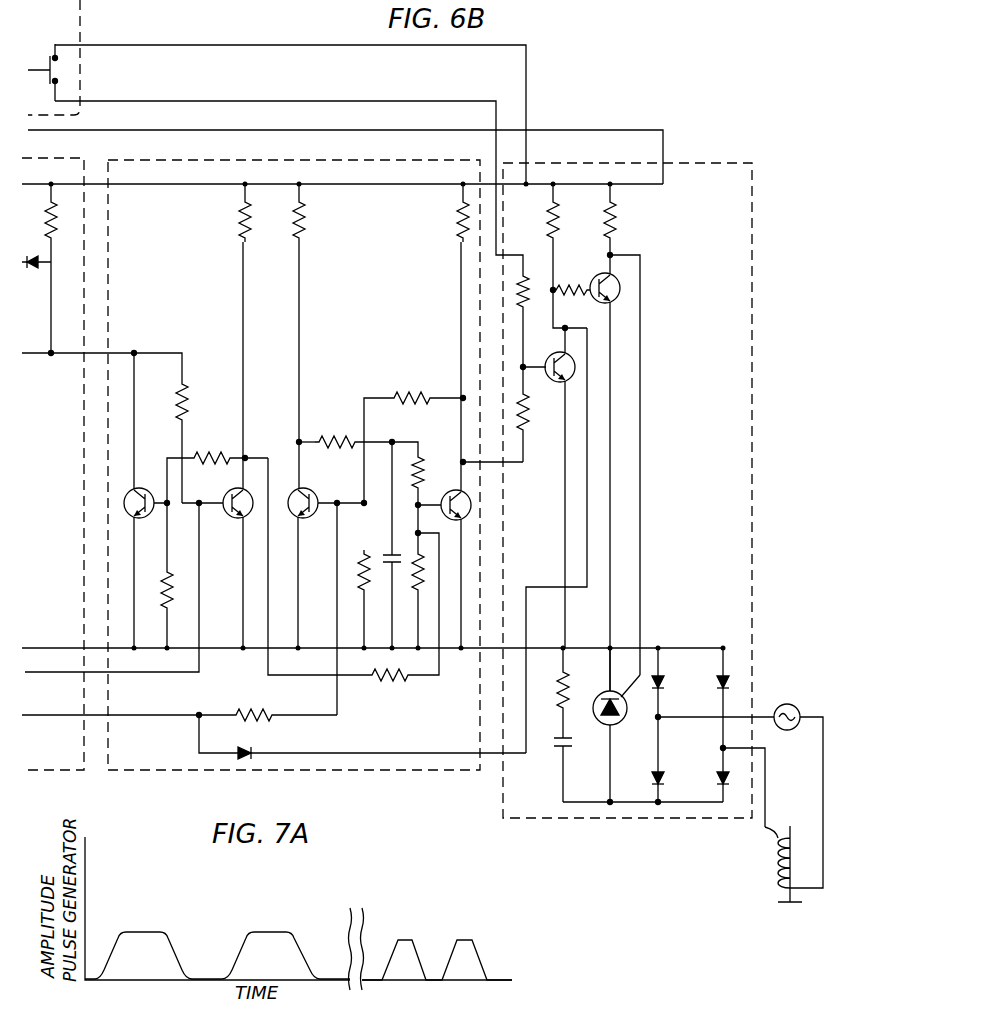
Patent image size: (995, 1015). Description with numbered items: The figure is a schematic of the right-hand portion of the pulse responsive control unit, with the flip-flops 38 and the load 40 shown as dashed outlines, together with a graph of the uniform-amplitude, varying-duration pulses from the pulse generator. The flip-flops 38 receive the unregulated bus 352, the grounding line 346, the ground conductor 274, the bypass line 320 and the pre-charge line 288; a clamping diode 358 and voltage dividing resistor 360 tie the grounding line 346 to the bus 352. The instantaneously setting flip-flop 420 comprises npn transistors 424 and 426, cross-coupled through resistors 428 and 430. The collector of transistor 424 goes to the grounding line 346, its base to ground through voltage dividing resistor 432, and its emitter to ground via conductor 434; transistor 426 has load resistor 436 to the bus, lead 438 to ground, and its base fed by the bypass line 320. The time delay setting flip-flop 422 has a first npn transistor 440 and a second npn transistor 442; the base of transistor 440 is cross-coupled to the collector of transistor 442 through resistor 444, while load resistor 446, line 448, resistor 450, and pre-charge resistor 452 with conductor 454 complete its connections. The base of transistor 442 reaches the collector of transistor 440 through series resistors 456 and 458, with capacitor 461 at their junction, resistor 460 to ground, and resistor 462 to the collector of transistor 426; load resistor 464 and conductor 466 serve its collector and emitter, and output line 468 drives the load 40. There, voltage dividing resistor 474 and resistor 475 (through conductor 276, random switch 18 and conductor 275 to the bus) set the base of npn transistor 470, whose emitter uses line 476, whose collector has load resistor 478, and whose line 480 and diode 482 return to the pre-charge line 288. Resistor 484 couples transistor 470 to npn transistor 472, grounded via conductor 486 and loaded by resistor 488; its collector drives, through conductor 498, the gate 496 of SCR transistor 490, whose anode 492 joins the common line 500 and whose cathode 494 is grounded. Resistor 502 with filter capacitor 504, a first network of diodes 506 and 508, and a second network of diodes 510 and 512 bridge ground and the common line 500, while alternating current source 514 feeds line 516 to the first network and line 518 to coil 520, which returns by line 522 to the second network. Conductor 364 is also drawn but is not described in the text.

The random switch 18 is at (48, 54).
The conductor 275 is at (218, 44).
The conductor 276 is at (213, 100).
The conductor 364 is at (180, 128).
The unregulated bus 352 is at (174, 180).
The load 40 is at (721, 166).
The flip-flops 38 is at (186, 781).
The voltage dividing resistor 360 is at (55, 222).
The clamping diode 358 is at (30, 270).
The grounding line 346 is at (71, 354).
The resistor 430 is at (187, 410).
The instantaneously setting flip-flop 420 is at (170, 449).
The resistor 428 is at (207, 452).
The npn transistor 424 is at (126, 502).
The conductor 434 is at (134, 572).
The voltage dividing resistor 432 is at (163, 608).
The npn transistor 426 is at (224, 497).
The lead 438 is at (242, 600).
The load resistor 436 is at (240, 222).
The bypass line 320 is at (122, 672).
The ground conductor 274 is at (64, 647).
The load resistor 446 is at (306, 226).
The first npn transistor 440 is at (312, 498).
The line 448 is at (312, 560).
The resistor 458 is at (322, 448).
The time delay setting flip-flop 422 is at (343, 426).
The resistor 444 is at (428, 386).
The conductor 454 is at (337, 628).
The resistor 450 is at (364, 596).
The capacitor 461 is at (383, 555).
The resistor 456 is at (421, 462).
The second npn transistor 442 is at (448, 496).
The conductor 466 is at (461, 604).
The resistor 460 is at (416, 598).
The resistor 462 is at (386, 682).
The load resistor 464 is at (460, 222).
The output line 468 is at (495, 466).
The pre-charge line 288 is at (117, 715).
The pre-charge resistor 452 is at (266, 708).
The diode 482 is at (255, 750).
The resistor 475 is at (526, 272).
The voltage dividing resistor 474 is at (528, 420).
The npn transistor 470 is at (550, 358).
The line 476 is at (564, 531).
The load resistor 478 is at (590, 216).
The resistor 484 is at (572, 284).
The npn transistor 472 is at (608, 303).
The conductor 486 is at (609, 600).
The load resistor 488 is at (618, 230).
The conductor 498 is at (641, 454).
The line 480 is at (552, 587).
The gate 496 is at (641, 692).
The cathode 494 is at (603, 693).
The anode 492 is at (622, 723).
The SCR transistor 490 is at (602, 733).
The resistor 502 is at (556, 688).
The filter capacitor 504 is at (556, 748).
The common line 500 is at (563, 800).
The diode 506 is at (662, 686).
The diode 508 is at (652, 784).
The diode 510 is at (731, 686).
The diode 512 is at (716, 782).
The line 516 is at (708, 722).
The alternating current source 514 is at (796, 707).
The line 518 is at (824, 758).
The line 522 is at (766, 800).
The coil 520 is at (776, 857).